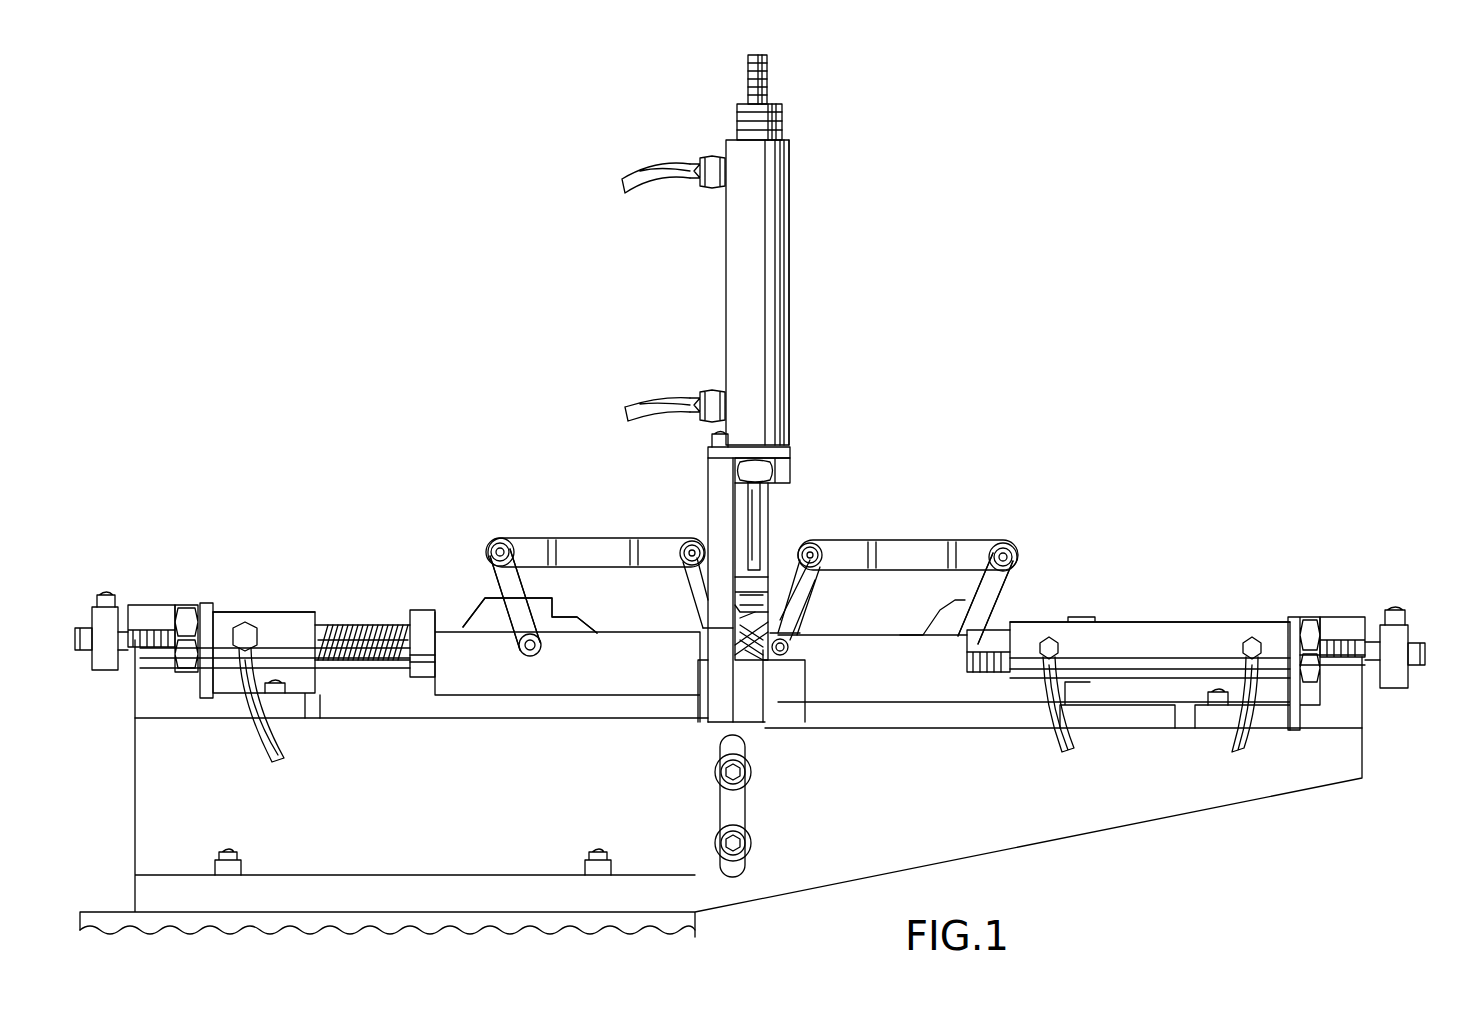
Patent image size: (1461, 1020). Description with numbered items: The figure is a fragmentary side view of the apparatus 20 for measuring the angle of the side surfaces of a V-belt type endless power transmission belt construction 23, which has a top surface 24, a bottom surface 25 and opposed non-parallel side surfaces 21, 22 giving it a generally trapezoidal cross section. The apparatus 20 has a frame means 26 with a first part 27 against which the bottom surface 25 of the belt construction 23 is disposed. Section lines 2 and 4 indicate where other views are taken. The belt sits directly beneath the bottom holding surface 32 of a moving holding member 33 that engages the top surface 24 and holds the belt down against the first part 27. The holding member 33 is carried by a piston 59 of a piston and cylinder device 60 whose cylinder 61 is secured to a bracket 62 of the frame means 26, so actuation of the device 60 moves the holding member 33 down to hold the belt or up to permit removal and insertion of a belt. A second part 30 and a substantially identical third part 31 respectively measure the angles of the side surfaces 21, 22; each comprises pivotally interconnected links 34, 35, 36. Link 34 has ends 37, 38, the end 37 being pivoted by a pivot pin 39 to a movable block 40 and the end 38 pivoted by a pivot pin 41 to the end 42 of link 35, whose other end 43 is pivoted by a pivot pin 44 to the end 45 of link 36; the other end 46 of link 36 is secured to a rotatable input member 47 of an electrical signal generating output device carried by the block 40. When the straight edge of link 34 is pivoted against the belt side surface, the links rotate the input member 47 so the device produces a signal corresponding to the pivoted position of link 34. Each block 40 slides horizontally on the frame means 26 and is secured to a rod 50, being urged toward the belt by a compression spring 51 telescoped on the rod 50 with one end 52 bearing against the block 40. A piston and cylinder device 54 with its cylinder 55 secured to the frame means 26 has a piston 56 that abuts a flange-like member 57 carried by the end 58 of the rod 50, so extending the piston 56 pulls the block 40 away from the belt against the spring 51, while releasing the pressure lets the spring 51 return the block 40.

The section line 2- 2 is at (797, 78).
The section line 4- 4 is at (642, 512).
The apparatus 20 is at (1146, 364).
The side surface 21 is at (735, 645).
The side surface 22 is at (790, 647).
The belt construction 23 is at (740, 660).
The top surface 24 is at (735, 612).
The bottom surface 25 is at (768, 660).
The frame means 26 is at (1170, 808).
The first part 27 is at (718, 725).
The second part 30 is at (602, 490).
The third part 31 is at (919, 521).
The bottom holding surface 32 is at (775, 632).
The holding member 33 is at (775, 605).
The link 34 is at (690, 595).
The link 35 is at (585, 538).
The link 36 is at (505, 590).
The end 37 is at (700, 635).
The end 38 is at (700, 578).
The pivot pin 39 is at (790, 655).
The movable block 40 is at (575, 705).
The pivot pin 41 is at (705, 532).
The end 42 is at (670, 545).
The outer pivot knuckle 43 is at (520, 538).
The pivot pin 44 is at (495, 548).
The end 45 is at (500, 585).
The end 46 is at (525, 638).
The rotatable input member 47 is at (527, 655).
The rod 50 is at (352, 625).
The compression spring 51 is at (360, 625).
The end 52 is at (410, 660).
The piston and cylinder device 54 is at (257, 604).
The cylinder 55 is at (295, 600).
The piston 56 is at (170, 605).
The flange-like member 57 is at (108, 672).
The end 58 is at (82, 650).
The piston 59 is at (772, 488).
The piston and cylinder device 60 is at (822, 306).
The cylinder 61 is at (782, 345).
The bracket 62 is at (760, 450).